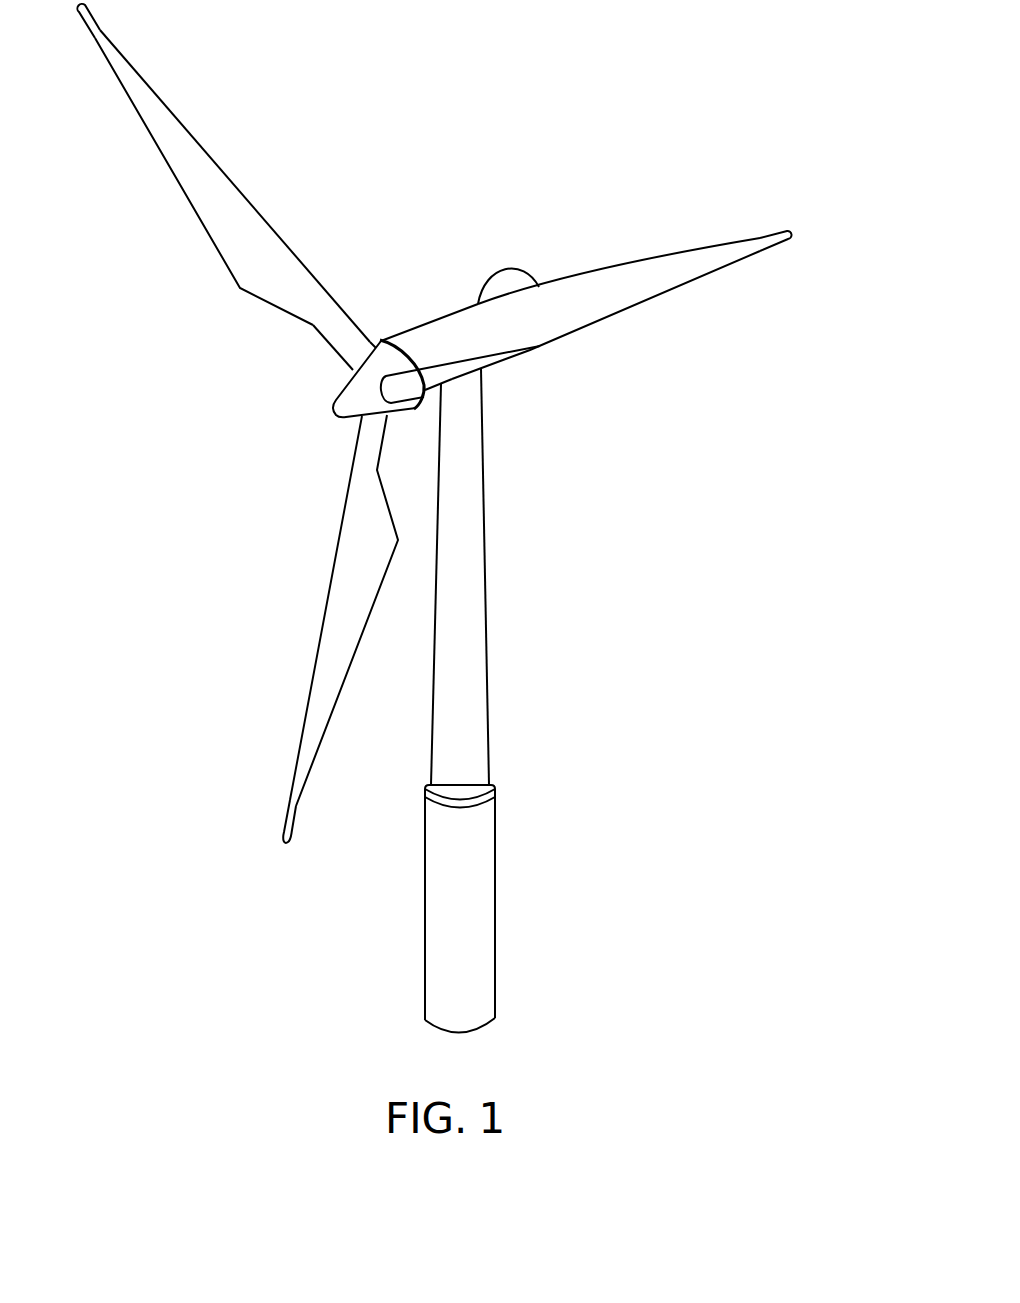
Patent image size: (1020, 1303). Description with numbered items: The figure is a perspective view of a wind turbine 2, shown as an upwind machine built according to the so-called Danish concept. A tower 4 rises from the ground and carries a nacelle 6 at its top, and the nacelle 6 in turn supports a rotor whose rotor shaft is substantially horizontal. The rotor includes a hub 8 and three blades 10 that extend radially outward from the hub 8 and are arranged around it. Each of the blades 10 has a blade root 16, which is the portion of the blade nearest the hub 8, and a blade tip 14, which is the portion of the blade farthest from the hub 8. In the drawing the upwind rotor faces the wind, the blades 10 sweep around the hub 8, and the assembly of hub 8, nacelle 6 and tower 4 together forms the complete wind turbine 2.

The wind turbine 2 is at (592, 666).
The tower 4 is at (468, 582).
The nacelle 6 is at (448, 313).
The hub 8 is at (343, 402).
The blades 10 is at (243, 255).
The blade tip 14 is at (120, 65).
The blade root 16 is at (353, 345).